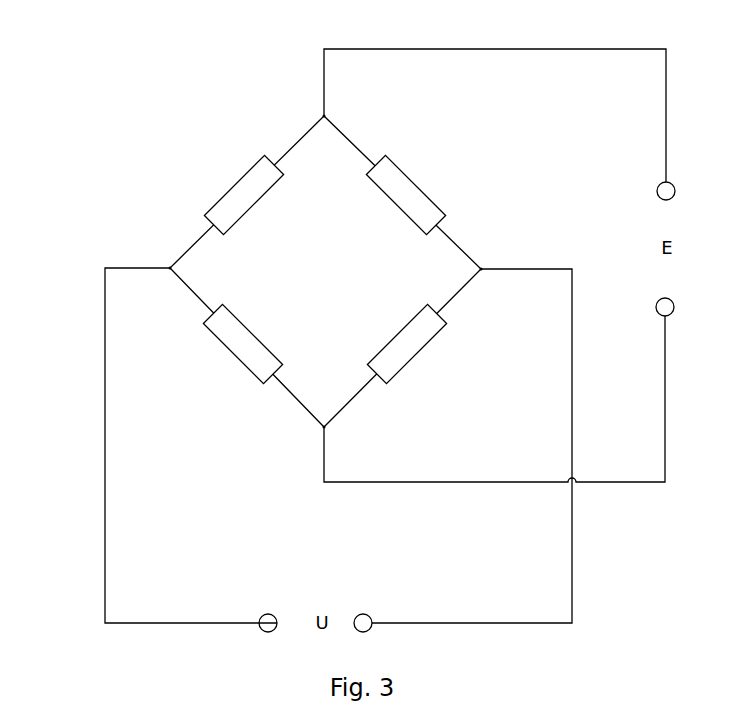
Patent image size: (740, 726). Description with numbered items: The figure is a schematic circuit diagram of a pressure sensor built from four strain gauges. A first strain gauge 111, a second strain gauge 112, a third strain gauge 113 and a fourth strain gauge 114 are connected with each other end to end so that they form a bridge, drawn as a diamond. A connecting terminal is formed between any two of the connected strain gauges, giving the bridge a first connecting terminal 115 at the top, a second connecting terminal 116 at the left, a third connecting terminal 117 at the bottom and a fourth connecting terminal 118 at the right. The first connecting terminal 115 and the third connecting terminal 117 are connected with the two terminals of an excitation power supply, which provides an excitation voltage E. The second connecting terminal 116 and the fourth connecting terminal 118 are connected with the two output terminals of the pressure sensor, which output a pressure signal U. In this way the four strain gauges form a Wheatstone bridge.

The first strain gauge 111 is at (232, 188).
The second strain gauge 112 is at (237, 362).
The third strain gauge 113 is at (412, 358).
The fourth strain gauge 114 is at (422, 187).
The first connecting terminal 115 is at (322, 115).
The second connecting terminal 116 is at (166, 267).
The third connecting terminal 117 is at (321, 428).
The fourth connecting terminal 118 is at (482, 267).